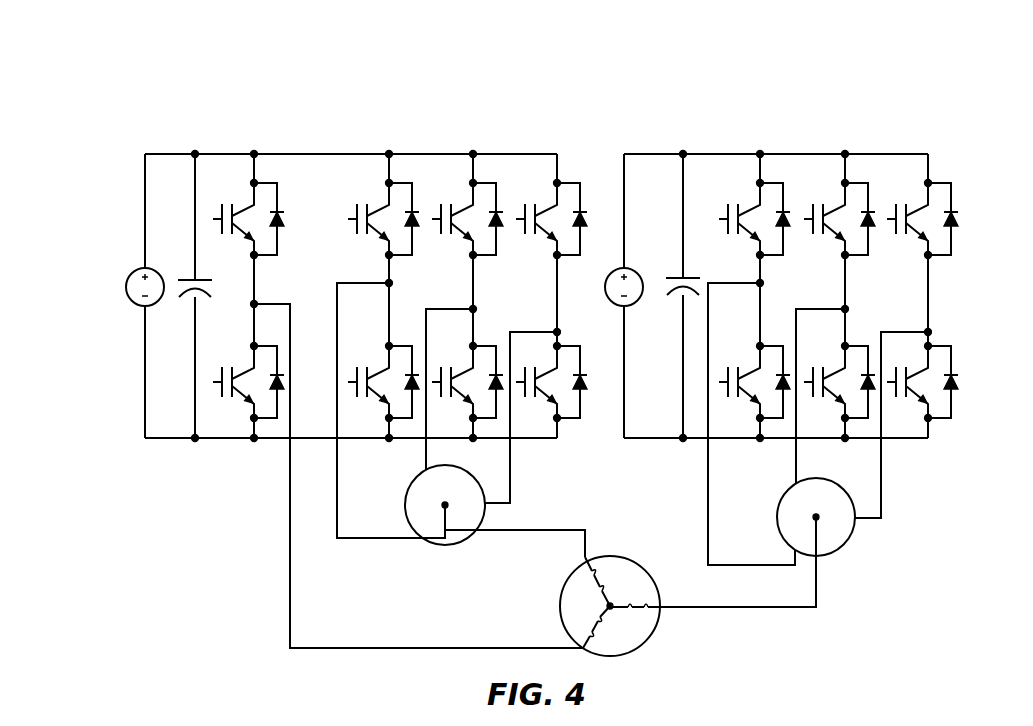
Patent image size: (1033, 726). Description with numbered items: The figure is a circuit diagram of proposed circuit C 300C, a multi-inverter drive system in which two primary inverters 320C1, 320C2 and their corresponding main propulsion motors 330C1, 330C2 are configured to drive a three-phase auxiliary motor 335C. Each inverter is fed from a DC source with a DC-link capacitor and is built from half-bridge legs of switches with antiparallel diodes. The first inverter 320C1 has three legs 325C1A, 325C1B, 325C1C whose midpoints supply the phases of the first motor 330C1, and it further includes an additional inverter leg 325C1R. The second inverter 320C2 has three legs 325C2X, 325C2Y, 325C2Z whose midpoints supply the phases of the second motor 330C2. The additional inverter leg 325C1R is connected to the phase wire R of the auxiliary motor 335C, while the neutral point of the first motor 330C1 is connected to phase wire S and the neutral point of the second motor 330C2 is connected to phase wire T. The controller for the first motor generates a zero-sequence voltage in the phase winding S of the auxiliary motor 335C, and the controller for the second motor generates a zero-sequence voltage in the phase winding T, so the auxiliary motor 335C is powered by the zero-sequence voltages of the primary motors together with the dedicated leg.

The proposed circuit C 300C is at (90, 69).
The inverter 320C1 is at (585, 94).
The inverter 320C2 is at (948, 94).
The additional inverter leg 325C1R is at (291, 150).
The inverter leg 325C1A is at (422, 150).
The inverter leg 325C1B is at (512, 150).
The inverter leg 325C1C is at (592, 150).
The inverter leg 325C2X is at (790, 150).
The inverter leg 325C2Y is at (878, 150).
The inverter leg 325C2Z is at (960, 150).
The main propulsion motor 330C1 is at (447, 546).
The main propulsion motor 330C2 is at (845, 548).
The three-phase auxiliary motor 335C is at (662, 622).